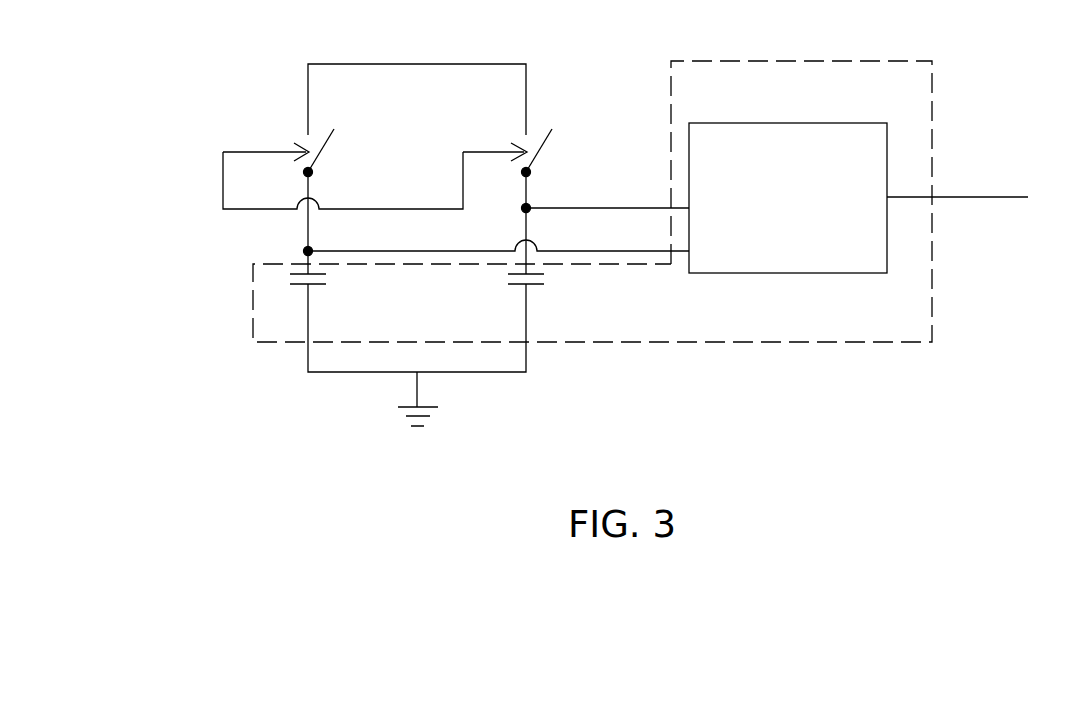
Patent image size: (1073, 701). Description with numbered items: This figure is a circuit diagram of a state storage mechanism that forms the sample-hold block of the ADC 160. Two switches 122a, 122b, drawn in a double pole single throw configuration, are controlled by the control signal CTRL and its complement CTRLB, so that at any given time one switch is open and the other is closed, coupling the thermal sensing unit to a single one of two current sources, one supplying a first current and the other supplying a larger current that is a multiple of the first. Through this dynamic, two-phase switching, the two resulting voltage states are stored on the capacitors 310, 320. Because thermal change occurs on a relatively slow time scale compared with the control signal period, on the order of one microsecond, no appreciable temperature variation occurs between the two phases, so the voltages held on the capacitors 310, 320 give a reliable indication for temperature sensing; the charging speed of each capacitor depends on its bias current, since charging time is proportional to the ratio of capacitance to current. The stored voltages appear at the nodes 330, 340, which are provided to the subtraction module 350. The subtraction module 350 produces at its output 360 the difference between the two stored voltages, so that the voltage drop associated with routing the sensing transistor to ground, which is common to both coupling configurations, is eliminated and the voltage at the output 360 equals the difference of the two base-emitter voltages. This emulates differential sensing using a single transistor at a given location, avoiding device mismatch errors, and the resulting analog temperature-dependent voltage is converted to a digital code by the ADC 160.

The ADC 160 is at (787, 60).
The switch 122a is at (330, 148).
The switch 122b is at (550, 145).
The capacitor 310 is at (320, 290).
The capacitor 320 is at (537, 290).
The node 330 is at (595, 207).
The node 340 is at (596, 251).
The subtraction module 350 is at (817, 273).
The output 360 is at (968, 197).